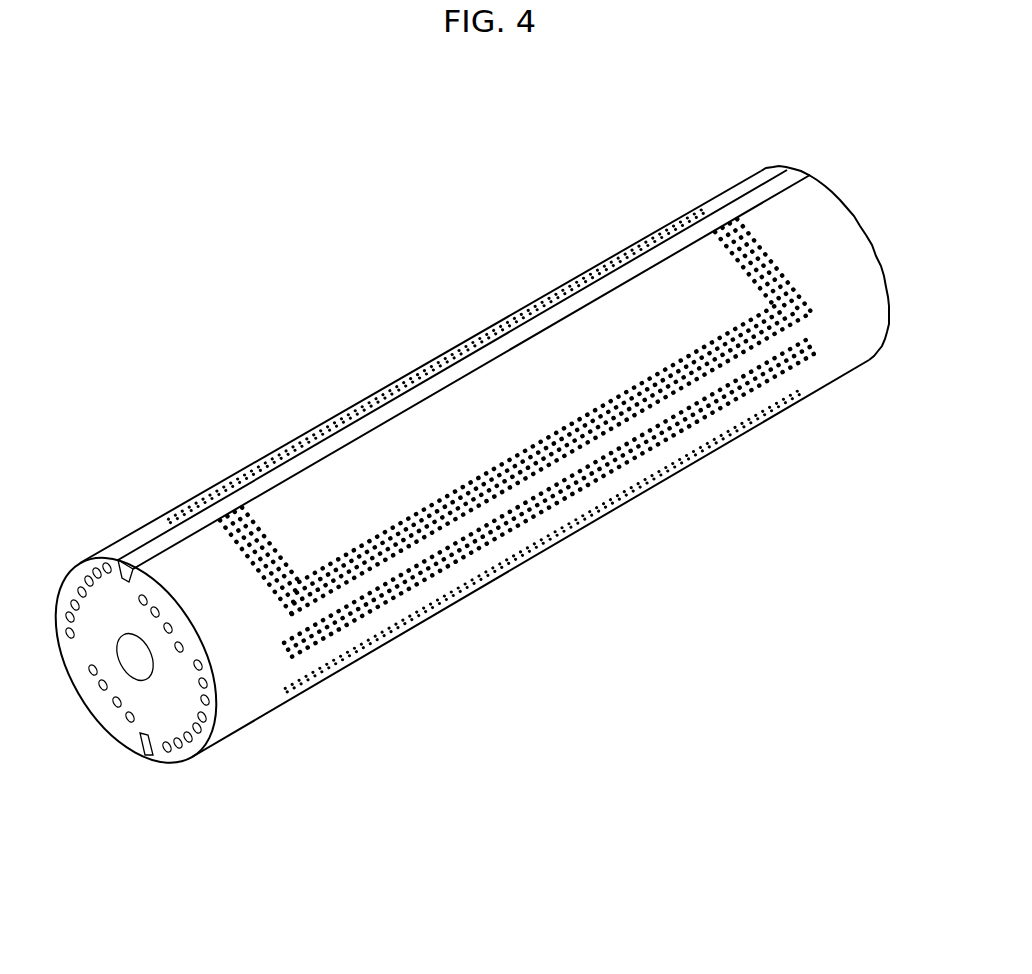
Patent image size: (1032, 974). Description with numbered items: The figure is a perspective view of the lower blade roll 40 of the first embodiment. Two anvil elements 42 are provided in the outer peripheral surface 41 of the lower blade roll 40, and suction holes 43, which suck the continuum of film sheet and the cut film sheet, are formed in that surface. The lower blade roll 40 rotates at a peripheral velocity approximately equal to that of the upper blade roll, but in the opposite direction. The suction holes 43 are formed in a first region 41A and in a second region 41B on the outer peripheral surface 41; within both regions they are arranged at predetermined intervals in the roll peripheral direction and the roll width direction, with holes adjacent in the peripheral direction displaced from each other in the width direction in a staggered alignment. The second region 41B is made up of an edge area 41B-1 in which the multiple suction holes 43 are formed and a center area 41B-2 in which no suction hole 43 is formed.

The lower blade roll 40 is at (283, 308).
The outer peripheral surface 41 is at (822, 220).
The first region 41A is at (713, 452).
The second region 41B is at (258, 625).
The edge area 41B-1 is at (572, 452).
The center area 41B-2 is at (645, 345).
The anvil element 42 is at (795, 170).
The suction hole 43 is at (453, 603).